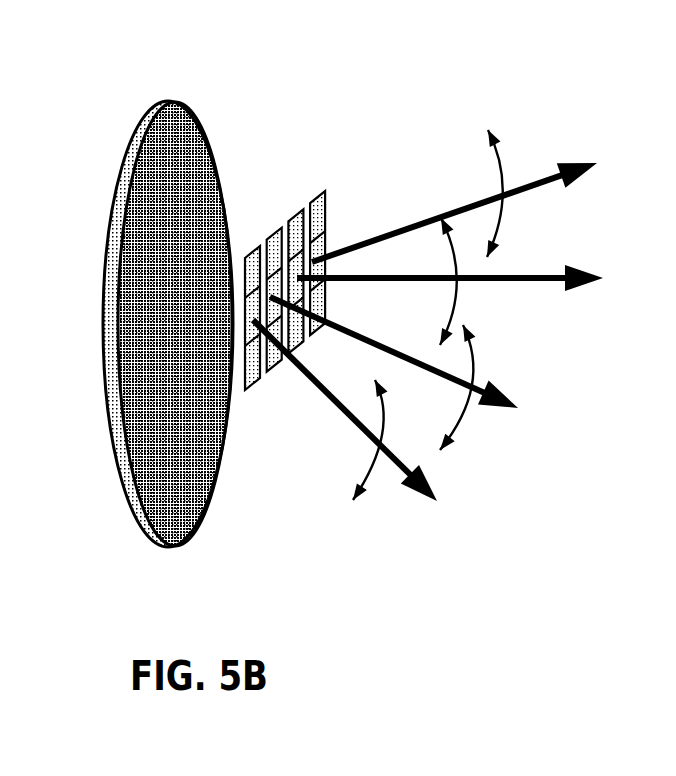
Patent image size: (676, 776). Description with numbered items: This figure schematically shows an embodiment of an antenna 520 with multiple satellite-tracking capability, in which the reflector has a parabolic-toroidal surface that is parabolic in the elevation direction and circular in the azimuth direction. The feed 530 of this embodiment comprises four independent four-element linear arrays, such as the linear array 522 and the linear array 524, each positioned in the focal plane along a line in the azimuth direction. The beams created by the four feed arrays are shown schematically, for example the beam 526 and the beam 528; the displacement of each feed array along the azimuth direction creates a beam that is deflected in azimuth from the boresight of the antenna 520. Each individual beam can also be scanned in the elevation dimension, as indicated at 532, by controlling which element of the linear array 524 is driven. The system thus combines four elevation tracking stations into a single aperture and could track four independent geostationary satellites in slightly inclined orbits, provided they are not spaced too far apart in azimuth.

The antenna 520 is at (132, 314).
The four-element linear array 522 is at (256, 245).
The four-element linear array 524 is at (322, 201).
The beam 526 is at (466, 148).
The beam 528 is at (365, 457).
The feed 530 is at (276, 455).
The elevation scanning 532 is at (507, 142).